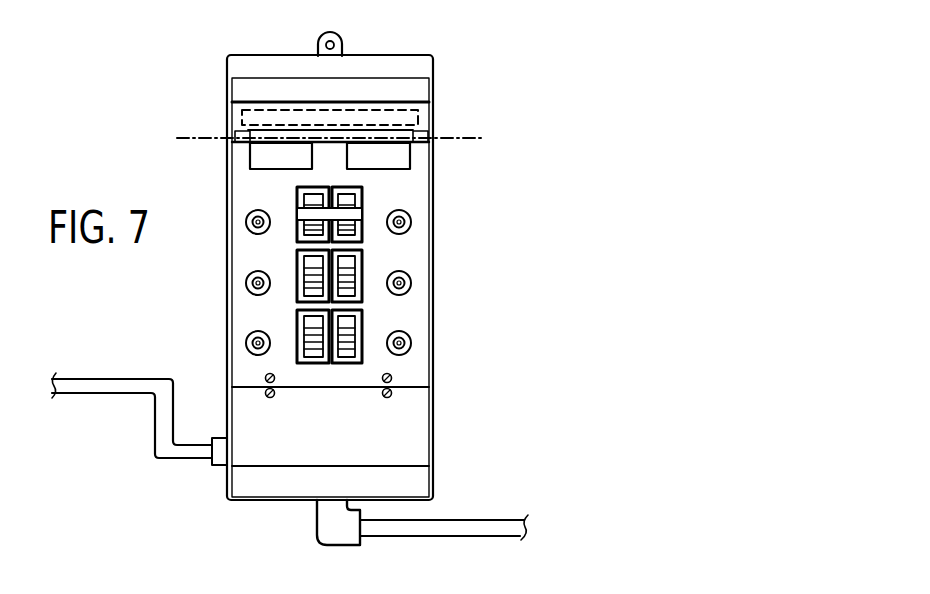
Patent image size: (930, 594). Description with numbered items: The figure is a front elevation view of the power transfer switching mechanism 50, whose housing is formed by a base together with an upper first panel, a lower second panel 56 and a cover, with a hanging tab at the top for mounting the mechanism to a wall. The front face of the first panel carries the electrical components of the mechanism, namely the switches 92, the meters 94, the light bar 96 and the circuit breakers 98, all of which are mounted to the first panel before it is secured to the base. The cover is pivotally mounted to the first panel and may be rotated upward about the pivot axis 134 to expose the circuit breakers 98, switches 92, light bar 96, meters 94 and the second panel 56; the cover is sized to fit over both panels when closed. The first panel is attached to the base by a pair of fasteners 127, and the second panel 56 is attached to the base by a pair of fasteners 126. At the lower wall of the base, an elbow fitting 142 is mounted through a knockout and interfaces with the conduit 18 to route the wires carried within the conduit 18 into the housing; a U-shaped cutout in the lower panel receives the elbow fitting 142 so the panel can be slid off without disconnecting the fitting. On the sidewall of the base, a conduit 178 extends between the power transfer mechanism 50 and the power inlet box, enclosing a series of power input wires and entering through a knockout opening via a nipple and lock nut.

The power transfer switching mechanism 50 is at (498, 42).
The light bar 96 is at (436, 107).
The pivot axis 134 is at (465, 141).
The meters 94 is at (355, 152).
The circuit breakers 98 is at (246, 224).
The switches 92 is at (364, 272).
The second panel 56 is at (405, 446).
The fasteners 127 is at (381, 378).
The fasteners 126 is at (384, 398).
The conduit 178 is at (170, 456).
The elbow fitting 142 is at (338, 538).
The conduit 18 is at (457, 528).